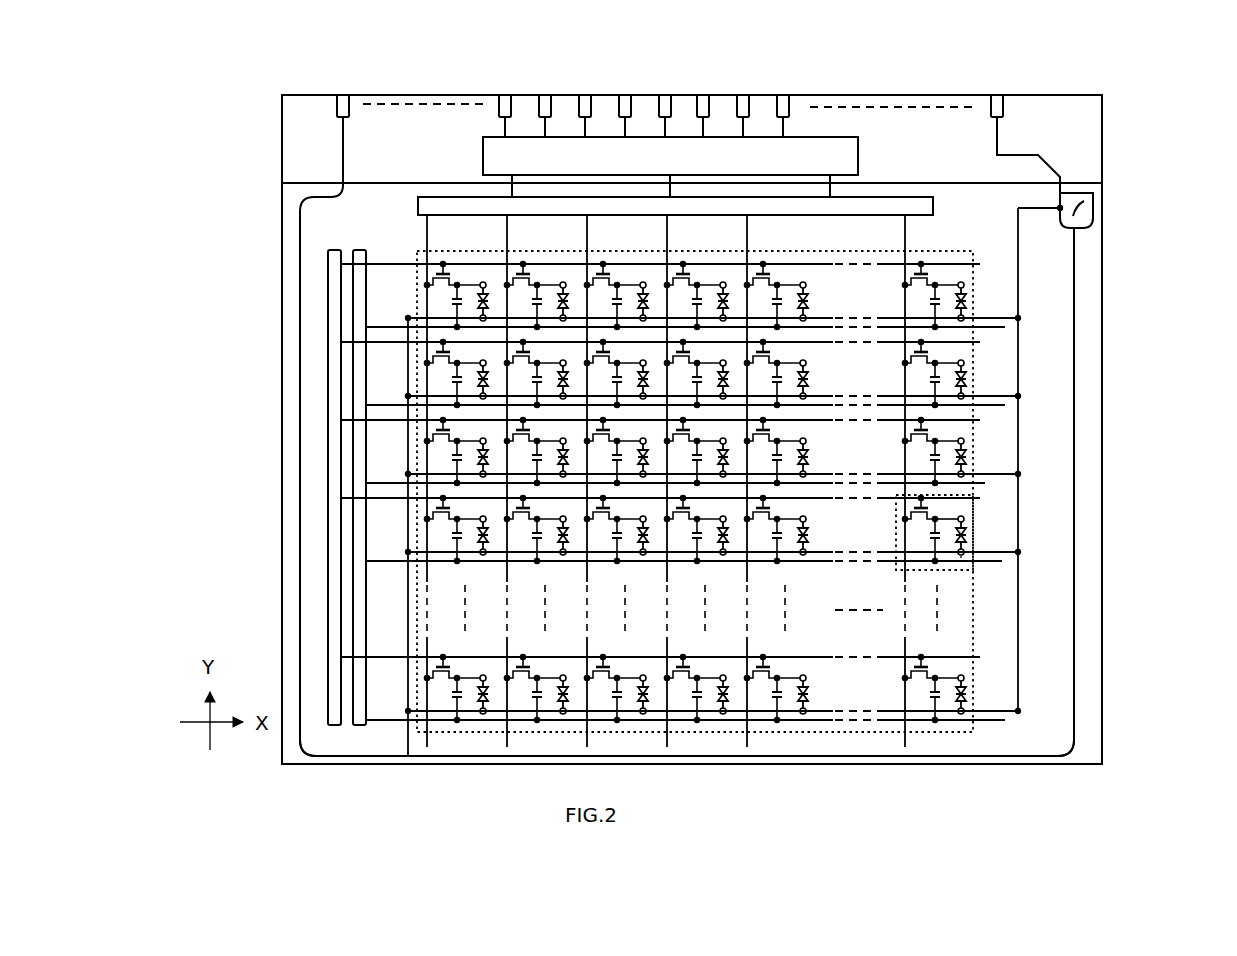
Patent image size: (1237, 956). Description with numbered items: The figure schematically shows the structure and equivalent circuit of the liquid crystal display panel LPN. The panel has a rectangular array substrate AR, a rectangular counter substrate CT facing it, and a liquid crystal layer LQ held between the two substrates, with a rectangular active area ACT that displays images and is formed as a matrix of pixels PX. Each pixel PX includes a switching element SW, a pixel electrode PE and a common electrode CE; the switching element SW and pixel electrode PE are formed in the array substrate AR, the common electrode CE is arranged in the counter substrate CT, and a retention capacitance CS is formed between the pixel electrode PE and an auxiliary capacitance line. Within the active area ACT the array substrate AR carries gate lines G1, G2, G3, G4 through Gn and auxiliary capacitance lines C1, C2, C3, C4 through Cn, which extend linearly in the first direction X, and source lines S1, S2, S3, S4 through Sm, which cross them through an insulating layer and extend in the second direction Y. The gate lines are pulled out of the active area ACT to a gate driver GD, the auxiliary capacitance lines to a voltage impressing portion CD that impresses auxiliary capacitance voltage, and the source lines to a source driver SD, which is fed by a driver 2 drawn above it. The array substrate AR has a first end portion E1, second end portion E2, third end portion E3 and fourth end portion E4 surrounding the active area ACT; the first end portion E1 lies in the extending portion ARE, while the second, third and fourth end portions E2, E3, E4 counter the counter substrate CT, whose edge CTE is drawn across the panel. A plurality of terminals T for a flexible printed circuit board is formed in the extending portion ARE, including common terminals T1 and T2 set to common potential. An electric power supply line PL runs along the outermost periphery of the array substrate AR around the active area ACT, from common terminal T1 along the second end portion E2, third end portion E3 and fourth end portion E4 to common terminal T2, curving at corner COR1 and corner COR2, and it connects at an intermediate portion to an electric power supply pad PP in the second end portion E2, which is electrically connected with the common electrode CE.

The liquid crystal display panel LPN is at (1130, 112).
The extending portion ARE is at (325, 107).
The array substrate AR is at (290, 121).
The counter substrate edge CTE is at (305, 180).
The counter substrate CT is at (288, 205).
The common terminal T2 is at (343, 93).
The terminals T is at (505, 93).
The first end portion E1 is at (835, 102).
The common terminal T1 is at (997, 93).
The driver IC 2 is at (858, 152).
The source driver SD is at (933, 206).
The electric power supply pad PP is at (1093, 203).
The source line S1 is at (429, 232).
The source line S2 is at (509, 232).
The source line S3 is at (589, 232).
The source line S4 is at (669, 232).
The source line Sm is at (907, 232).
The gate line G1 is at (388, 267).
The gate line G2 is at (388, 345).
The gate line G3 is at (388, 423).
The gate line G4 is at (388, 501).
The gate line Gn is at (388, 660).
The auxiliary capacitance line C1 is at (1005, 329).
The auxiliary capacitance line C2 is at (1005, 407).
The auxiliary capacitance line C3 is at (985, 484).
The auxiliary capacitance line C4 is at (952, 572).
The auxiliary capacitance line Cn is at (1005, 722).
The active area ACT is at (975, 378).
The electric power supply line PL is at (1078, 438).
The second end portion E2 is at (1106, 489).
The third end portion E3 is at (755, 765).
The fourth end portion E4 is at (280, 493).
The corner COR1 is at (1086, 750).
The corner COR2 is at (288, 760).
The voltage impressing portion CD is at (358, 552).
The gate driver GD is at (325, 597).
The pixel PX is at (975, 575).
The switching element SW is at (902, 518).
The pixel electrode PE is at (963, 517).
The liquid crystal layer LQ is at (966, 531).
The common electrode CE is at (963, 555).
The retention capacitance CS is at (920, 540).